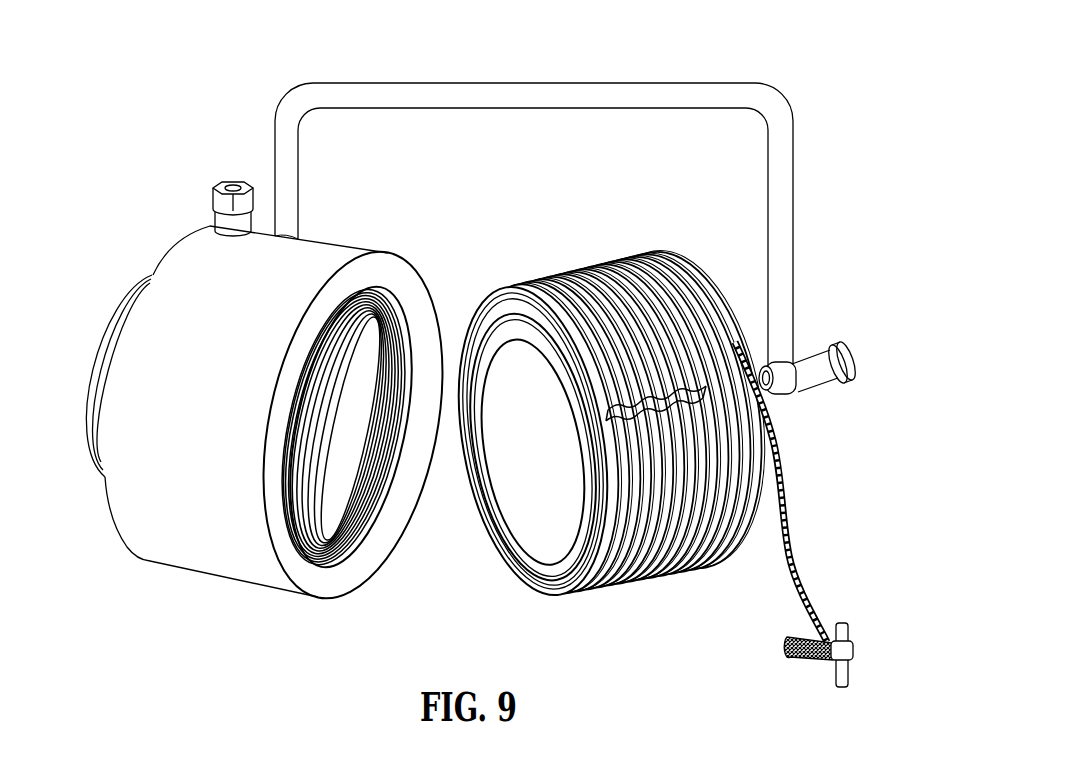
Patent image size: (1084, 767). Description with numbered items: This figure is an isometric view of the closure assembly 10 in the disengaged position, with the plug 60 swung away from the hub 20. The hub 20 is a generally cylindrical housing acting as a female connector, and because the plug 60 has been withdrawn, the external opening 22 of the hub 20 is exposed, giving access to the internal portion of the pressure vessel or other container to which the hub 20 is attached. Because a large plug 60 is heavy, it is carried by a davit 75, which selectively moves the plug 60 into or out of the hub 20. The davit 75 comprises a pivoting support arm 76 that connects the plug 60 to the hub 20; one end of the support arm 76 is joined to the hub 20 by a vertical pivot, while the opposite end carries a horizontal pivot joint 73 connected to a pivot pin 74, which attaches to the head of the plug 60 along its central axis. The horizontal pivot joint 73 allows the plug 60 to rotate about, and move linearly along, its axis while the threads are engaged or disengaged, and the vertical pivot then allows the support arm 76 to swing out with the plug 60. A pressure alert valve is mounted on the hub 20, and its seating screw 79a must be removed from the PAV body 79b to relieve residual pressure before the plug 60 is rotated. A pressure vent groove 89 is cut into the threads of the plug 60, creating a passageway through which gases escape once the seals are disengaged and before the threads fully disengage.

The closure assembly 10 is at (150, 88).
The hub 20 is at (347, 231).
The external opening 22 is at (360, 528).
The plug 60 is at (601, 231).
The horizontal pivot joint 73 is at (789, 387).
The pivot pin 74 is at (823, 373).
The davit 75 is at (787, 84).
The support arm 76 is at (549, 83).
The seating screw 79a is at (848, 615).
The PAV body 79b is at (225, 203).
The pressure vent groove 89 is at (697, 388).